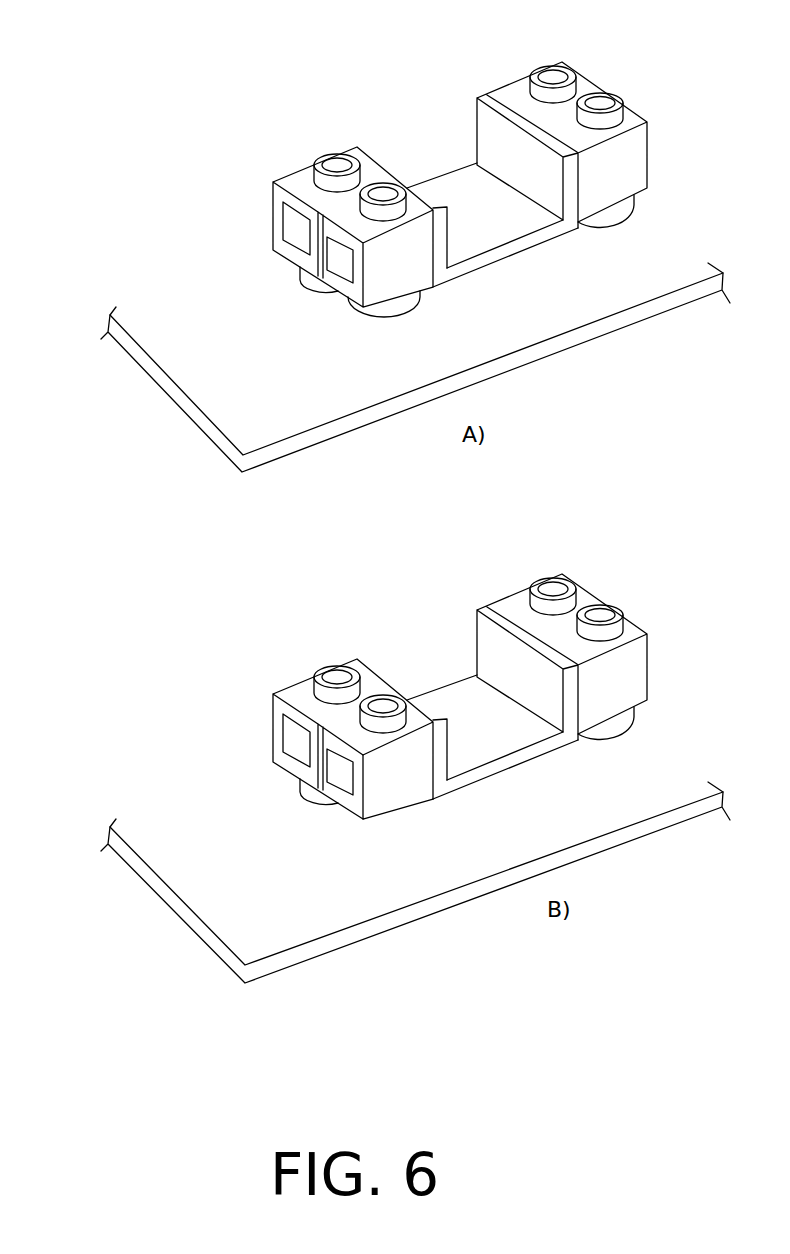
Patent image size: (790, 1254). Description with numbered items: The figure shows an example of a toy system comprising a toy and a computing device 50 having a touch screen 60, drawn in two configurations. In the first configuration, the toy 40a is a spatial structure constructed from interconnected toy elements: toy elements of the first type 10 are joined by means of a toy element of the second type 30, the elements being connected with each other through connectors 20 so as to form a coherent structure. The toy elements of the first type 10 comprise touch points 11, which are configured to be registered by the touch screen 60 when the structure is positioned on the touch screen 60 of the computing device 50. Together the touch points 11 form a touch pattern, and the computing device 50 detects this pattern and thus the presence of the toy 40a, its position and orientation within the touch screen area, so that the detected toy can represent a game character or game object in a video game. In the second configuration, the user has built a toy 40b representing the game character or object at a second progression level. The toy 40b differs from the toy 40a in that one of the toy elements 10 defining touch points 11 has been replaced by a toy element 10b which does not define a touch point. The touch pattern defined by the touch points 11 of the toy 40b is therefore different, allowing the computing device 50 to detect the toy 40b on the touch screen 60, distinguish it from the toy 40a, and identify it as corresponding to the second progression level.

The toy element of the first type 10 is at (300, 186).
The toy element 10b is at (398, 813).
The touch points 11 is at (320, 280).
The connectors 20 is at (333, 163).
The toy element of the second type 30 is at (527, 232).
The toy 40a is at (270, 59).
The toy 40b is at (415, 699).
The computing device 50 is at (162, 378).
The touch screen 60 is at (158, 325).